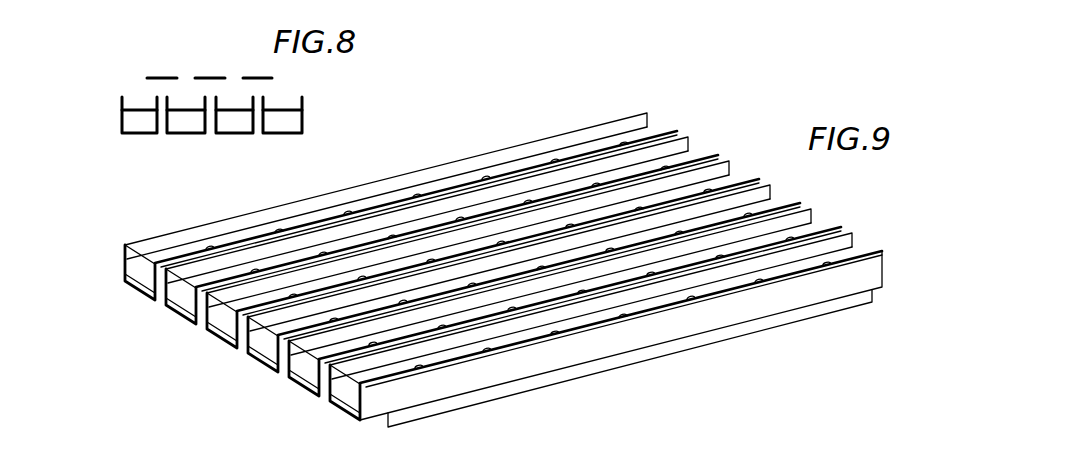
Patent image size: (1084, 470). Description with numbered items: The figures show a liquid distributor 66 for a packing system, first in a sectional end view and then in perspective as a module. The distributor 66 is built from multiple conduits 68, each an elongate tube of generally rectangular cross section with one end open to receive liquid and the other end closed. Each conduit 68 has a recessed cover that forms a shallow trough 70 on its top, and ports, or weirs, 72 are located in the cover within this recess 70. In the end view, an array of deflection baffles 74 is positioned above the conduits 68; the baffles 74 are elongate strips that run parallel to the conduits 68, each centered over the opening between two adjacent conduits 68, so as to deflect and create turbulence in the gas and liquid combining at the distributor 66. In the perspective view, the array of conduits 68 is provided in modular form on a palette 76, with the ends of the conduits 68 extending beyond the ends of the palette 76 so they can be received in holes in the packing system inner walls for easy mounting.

In FIG. 8, the liquid distributor 66 is at (177, 100).
In FIG. 9, the liquid distributor 66 is at (491, 254).
In FIG. 8, the conduit 68 is at (143, 133).
In FIG. 9, the conduit 68 is at (408, 393).
In FIG. 8, the shallow trough 70 is at (140, 108).
In FIG. 9, the shallow trough 70 is at (147, 258).
In FIG. 9, the ports or weirs 72 is at (622, 133).
In FIG. 8, the deflection baffles 74 is at (165, 76).
In FIG. 9, the palette 76 is at (694, 341).